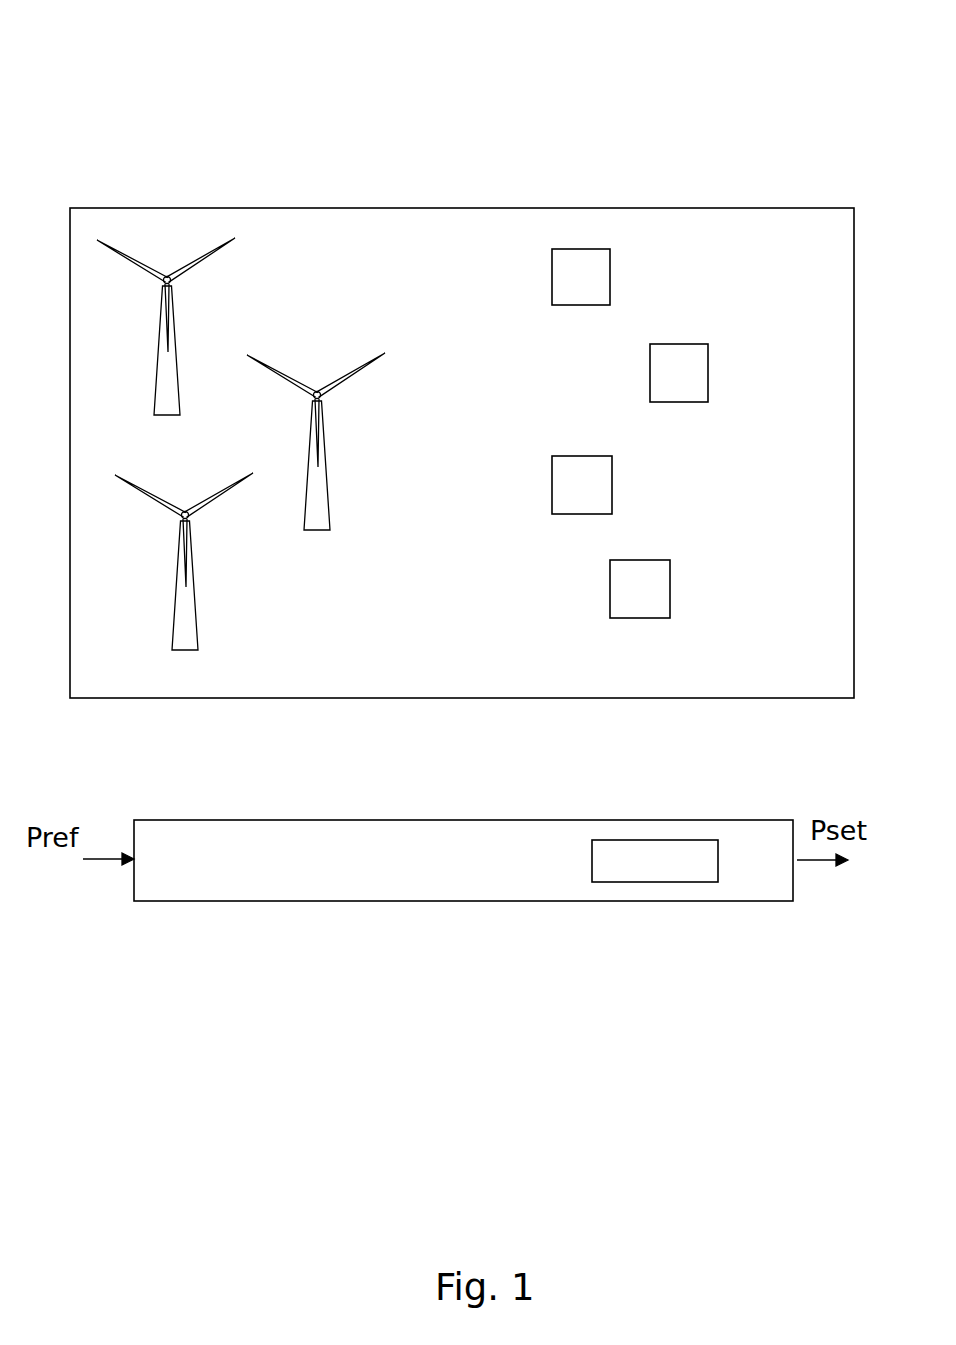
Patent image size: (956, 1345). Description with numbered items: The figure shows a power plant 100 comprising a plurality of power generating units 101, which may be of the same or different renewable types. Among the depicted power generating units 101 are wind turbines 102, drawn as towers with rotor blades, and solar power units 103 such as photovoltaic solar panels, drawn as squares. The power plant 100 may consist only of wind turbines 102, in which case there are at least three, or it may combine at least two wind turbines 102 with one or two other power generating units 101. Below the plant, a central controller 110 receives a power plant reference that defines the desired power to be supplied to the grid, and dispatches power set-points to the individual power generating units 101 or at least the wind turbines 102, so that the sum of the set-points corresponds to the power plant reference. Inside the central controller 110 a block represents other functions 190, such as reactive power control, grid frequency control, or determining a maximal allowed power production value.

The power plant 100 is at (168, 80).
The power generating unit 101 is at (188, 310).
The wind turbine 102 is at (202, 632).
The solar power unit 103 is at (672, 592).
The central controller 110 is at (253, 917).
The other functions 190 is at (585, 859).